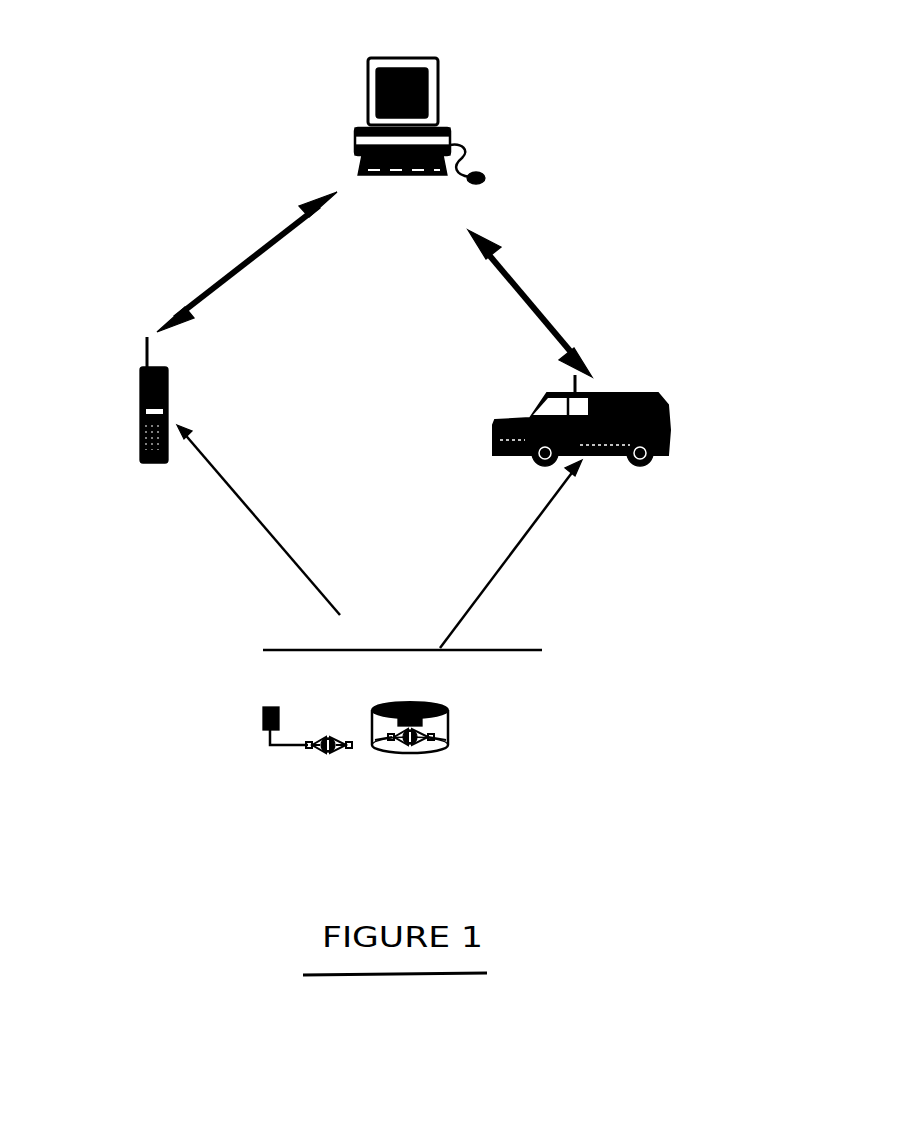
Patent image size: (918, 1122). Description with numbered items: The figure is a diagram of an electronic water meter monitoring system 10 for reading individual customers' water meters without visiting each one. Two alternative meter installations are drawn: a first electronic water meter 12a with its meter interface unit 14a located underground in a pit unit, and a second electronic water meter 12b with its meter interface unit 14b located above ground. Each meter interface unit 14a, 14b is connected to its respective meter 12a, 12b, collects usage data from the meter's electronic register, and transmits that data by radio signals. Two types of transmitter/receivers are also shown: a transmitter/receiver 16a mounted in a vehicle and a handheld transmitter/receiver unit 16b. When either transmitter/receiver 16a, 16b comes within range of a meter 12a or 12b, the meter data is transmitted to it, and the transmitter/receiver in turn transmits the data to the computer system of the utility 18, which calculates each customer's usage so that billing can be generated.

The electronic water meter monitoring system 10 is at (78, 28).
The computer system of the utility 18 is at (438, 98).
The vehicle-mounted transmitter/receiver 16a is at (668, 421).
The handheld transmitter/receiver 16b is at (143, 412).
The meter interface unit 14a is at (420, 722).
The meter interface unit 14b is at (263, 715).
The electronic water meter 12a is at (420, 742).
The electronic water meter 12b is at (338, 752).